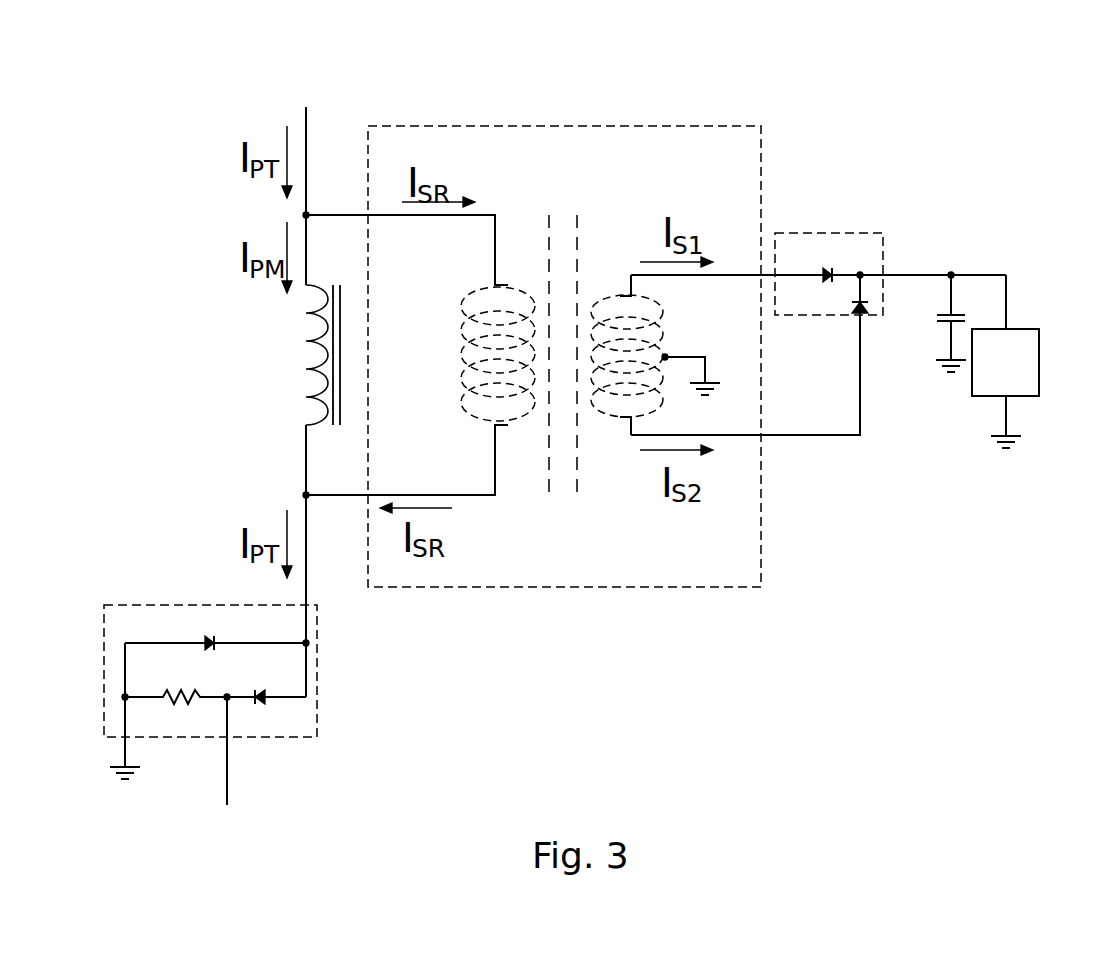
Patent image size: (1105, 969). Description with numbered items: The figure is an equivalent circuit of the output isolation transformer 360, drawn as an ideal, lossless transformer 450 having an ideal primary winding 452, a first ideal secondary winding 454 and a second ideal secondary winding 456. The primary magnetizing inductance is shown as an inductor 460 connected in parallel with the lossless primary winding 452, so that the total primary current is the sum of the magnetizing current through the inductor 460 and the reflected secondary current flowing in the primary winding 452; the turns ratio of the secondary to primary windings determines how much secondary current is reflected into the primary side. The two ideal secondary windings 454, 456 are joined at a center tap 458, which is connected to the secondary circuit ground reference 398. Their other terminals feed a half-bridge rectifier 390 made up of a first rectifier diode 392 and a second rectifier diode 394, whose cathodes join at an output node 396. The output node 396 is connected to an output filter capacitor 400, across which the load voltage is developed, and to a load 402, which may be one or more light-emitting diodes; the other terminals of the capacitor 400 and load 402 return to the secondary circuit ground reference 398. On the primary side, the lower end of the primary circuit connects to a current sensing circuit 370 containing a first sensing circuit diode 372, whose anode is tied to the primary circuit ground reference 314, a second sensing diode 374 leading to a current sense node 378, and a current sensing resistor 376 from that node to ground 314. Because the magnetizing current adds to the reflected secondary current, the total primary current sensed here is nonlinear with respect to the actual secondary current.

The output isolation transformer 360 is at (294, 79).
The ideal transformer 450 is at (612, 126).
The ideal primary winding 452 is at (463, 322).
The first ideal secondary winding 454 is at (664, 337).
The second ideal secondary winding 456 is at (664, 378).
The center tap 458 is at (667, 355).
The inductor 460 is at (316, 368).
The half-bridge rectifier 390 is at (826, 233).
The first rectifier diode 392 is at (826, 272).
The second rectifier diode 394 is at (856, 315).
The output node 396 is at (861, 273).
The secondary circuit ground reference 398 is at (708, 383).
The output filter capacitor 400 is at (946, 313).
The load 402 is at (1019, 329).
The current sensing circuit 370 is at (104, 672).
The first sensing circuit diode 372 is at (232, 632).
The second sensing diode 374 is at (253, 692).
The current sensing resistor 376 is at (195, 700).
The current sense node 378 is at (229, 698).
The primary circuit ground reference 314 is at (122, 767).